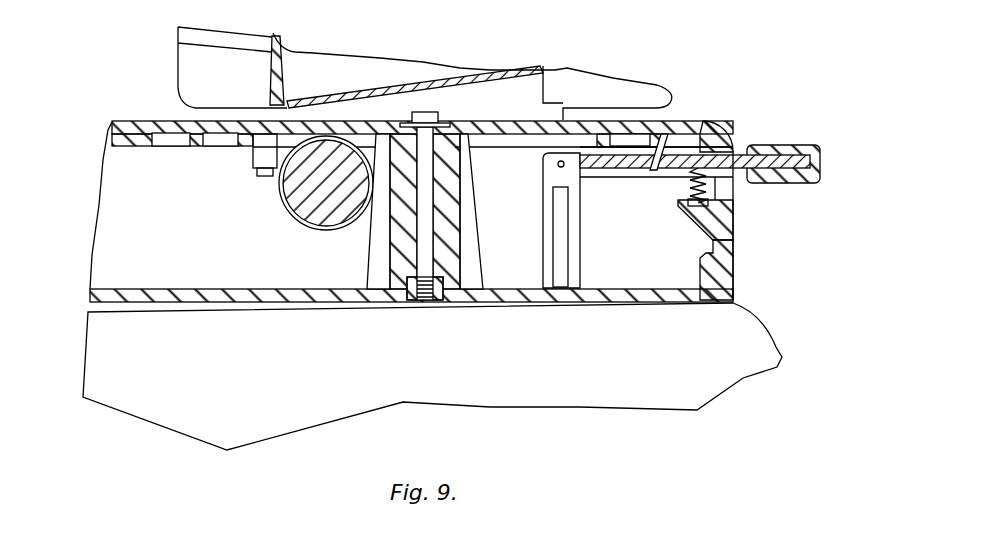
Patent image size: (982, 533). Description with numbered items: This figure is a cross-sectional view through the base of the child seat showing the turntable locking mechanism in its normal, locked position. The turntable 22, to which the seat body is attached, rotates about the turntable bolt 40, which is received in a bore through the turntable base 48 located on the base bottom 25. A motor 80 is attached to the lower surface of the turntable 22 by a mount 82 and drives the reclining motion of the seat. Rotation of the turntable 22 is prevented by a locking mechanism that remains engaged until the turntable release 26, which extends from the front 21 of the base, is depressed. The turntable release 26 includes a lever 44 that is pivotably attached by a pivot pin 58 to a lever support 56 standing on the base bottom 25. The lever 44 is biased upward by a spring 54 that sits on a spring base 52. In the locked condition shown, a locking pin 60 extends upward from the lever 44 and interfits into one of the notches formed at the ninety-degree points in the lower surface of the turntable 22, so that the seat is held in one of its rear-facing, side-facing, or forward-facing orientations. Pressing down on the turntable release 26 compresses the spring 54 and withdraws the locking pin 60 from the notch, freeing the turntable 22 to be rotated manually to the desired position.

The front 21 is at (733, 265).
The turntable 22 is at (500, 127).
The base bottom 25 is at (327, 295).
The turntable release 26 is at (805, 146).
The turntable bolt 40 is at (423, 216).
The lever 44 is at (728, 157).
The turntable base 48 is at (445, 290).
The spring base 52 is at (720, 203).
The spring 54 is at (692, 181).
The lever support 56 is at (570, 238).
The pivot pin 58 is at (558, 165).
The locking pin 60 is at (652, 142).
The motor 80 is at (310, 207).
The bracket 82 is at (258, 158).